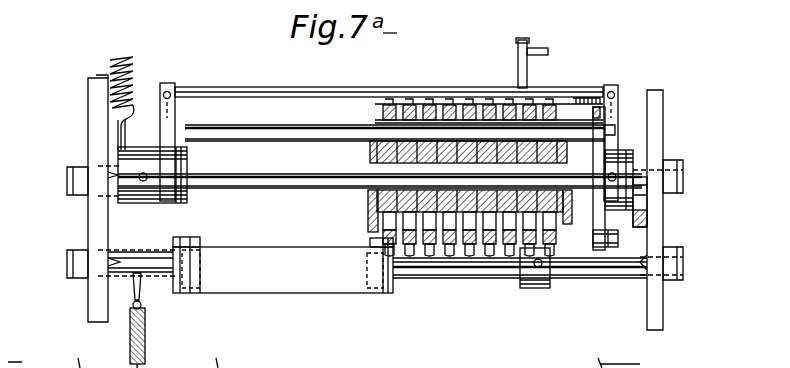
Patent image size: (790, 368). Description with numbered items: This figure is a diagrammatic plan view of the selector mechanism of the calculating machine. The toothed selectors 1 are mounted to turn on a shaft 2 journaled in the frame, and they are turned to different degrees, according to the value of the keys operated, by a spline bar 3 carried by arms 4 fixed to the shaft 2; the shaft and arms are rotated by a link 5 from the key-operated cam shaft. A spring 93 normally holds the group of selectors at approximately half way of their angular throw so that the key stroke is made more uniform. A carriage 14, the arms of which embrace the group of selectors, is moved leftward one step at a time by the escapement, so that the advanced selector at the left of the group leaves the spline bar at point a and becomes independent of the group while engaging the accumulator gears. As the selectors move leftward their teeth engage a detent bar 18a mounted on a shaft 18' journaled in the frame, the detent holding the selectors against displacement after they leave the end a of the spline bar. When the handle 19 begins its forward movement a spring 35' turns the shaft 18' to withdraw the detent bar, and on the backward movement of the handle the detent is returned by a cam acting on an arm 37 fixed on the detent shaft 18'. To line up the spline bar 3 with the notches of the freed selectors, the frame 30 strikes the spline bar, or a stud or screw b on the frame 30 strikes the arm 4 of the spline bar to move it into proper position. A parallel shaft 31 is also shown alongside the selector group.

The toothed selectors 1 is at (449, 105).
The shaft 2 is at (305, 180).
The spline bar 3 is at (272, 90).
The arms 4 is at (166, 132).
The link 5 is at (640, 192).
The carriage 14 is at (369, 205).
The detent bar 18a is at (279, 252).
The shaft 18' is at (377, 292).
The handle 19 is at (608, 250).
The frame 30 is at (186, 142).
The upper shaft 31 is at (330, 127).
The spring 35' is at (172, 320).
The arm 37 is at (527, 74).
The spring 93 is at (133, 70).
The point of spline bar a is at (383, 104).
The stud or screw b is at (610, 128).